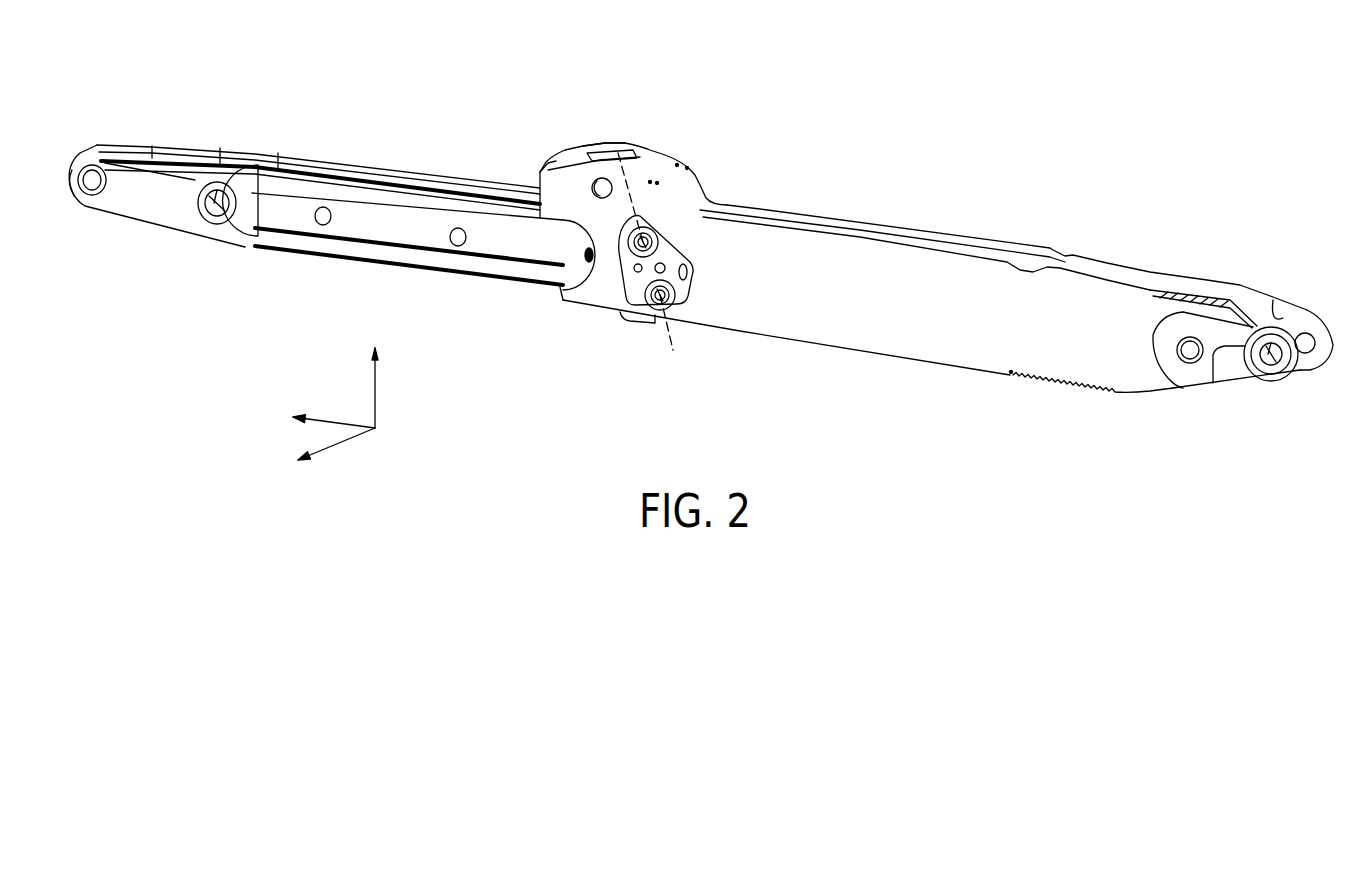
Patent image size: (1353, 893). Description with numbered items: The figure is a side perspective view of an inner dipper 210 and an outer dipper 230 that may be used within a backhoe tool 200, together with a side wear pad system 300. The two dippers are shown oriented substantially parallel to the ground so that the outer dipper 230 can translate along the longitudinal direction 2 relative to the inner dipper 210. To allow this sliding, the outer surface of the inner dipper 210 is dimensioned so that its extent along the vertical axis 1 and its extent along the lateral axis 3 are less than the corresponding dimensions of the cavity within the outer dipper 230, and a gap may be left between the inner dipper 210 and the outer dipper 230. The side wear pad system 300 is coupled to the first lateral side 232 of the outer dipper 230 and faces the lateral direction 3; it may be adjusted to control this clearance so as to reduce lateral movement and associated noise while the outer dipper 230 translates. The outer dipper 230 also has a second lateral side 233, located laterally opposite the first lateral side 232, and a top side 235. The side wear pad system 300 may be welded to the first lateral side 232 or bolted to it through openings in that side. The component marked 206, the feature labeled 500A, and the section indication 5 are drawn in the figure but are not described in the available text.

The backhoe tool 200 is at (926, 122).
The inner dipper 210 is at (392, 199).
The pivot boss 206 is at (223, 219).
The side wear pad system 300 is at (704, 294).
The sensor 500A is at (607, 121).
The section line 5- 5 is at (610, 135).
The outer dipper 230 is at (953, 343).
The first lateral side 232 is at (838, 270).
The second lateral side 233 is at (900, 228).
The top side 235 is at (1126, 283).
The vertical axis 1 is at (374, 397).
The longitudinal direction 2 is at (337, 422).
The lateral axis 3 is at (342, 443).